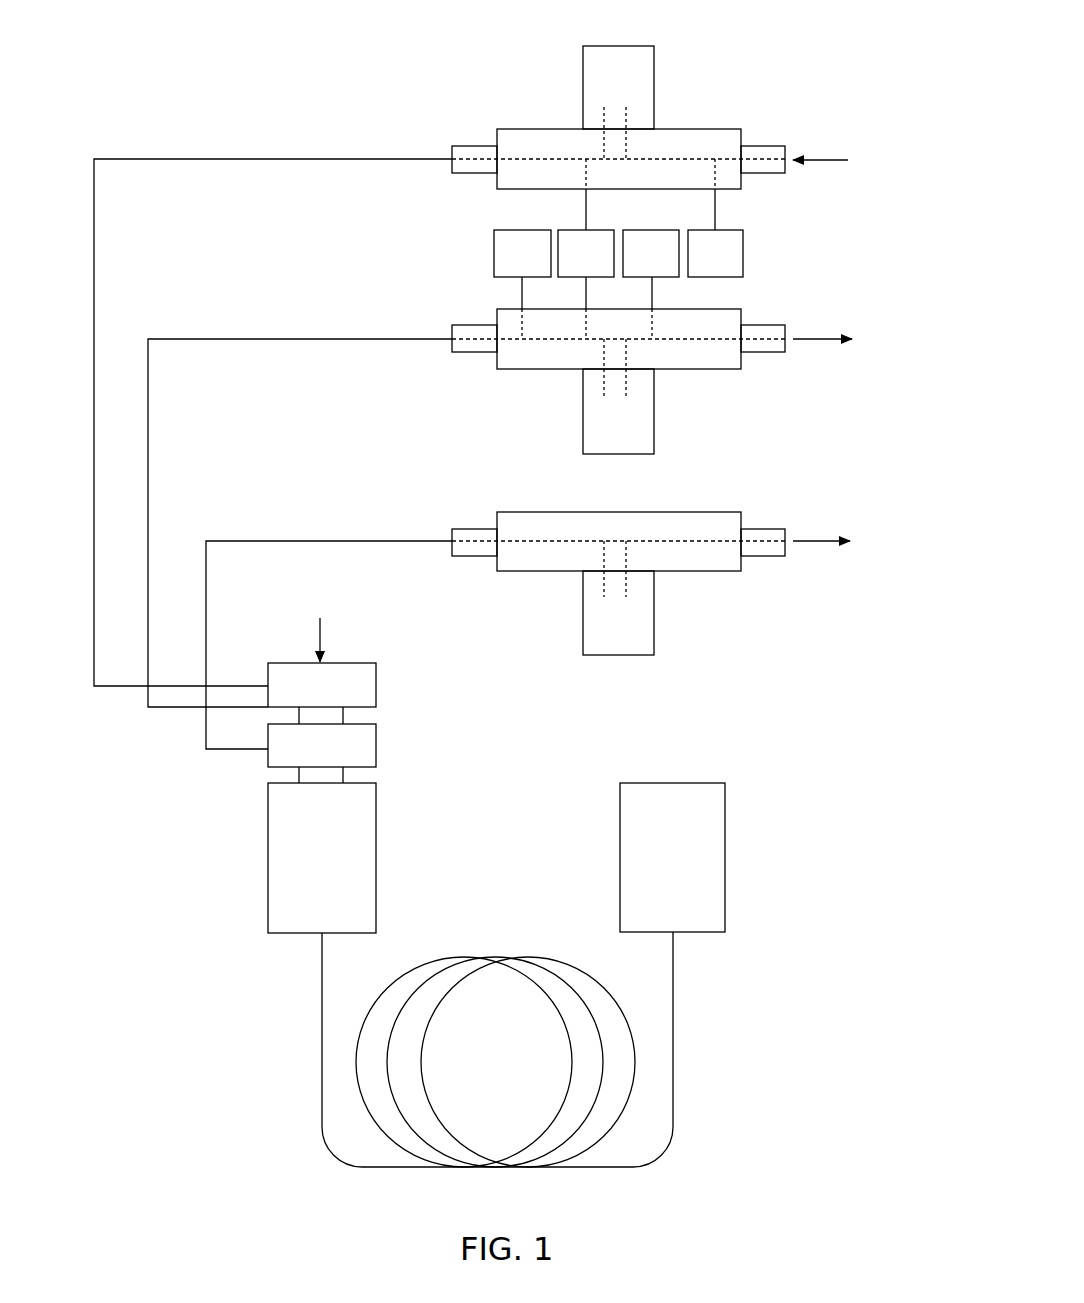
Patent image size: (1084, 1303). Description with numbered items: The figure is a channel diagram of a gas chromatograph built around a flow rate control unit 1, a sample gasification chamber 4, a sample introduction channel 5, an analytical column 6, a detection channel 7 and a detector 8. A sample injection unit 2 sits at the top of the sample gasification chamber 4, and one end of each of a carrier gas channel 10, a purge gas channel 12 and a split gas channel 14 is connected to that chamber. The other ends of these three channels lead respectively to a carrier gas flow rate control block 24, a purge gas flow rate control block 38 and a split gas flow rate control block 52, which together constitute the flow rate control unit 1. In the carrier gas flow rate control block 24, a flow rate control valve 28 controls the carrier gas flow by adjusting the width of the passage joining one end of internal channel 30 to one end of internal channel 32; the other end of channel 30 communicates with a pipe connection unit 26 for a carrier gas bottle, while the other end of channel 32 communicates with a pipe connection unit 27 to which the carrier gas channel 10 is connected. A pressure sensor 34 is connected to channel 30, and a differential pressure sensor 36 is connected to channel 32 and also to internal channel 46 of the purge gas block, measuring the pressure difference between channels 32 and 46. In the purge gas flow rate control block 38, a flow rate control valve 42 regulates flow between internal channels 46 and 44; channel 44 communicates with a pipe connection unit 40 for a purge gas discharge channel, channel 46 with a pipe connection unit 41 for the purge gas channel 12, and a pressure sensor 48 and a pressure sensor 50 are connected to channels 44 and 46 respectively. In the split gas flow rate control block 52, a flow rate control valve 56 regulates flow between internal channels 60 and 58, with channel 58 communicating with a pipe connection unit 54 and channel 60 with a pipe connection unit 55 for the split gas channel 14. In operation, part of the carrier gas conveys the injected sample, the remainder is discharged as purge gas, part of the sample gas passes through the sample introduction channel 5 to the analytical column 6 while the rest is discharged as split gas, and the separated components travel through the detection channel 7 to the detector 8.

The flow rate control unit 1 is at (817, 92).
The sample injection unit 2 is at (376, 663).
The sample gasification chamber 4 is at (376, 801).
The sample introduction channel 5 is at (323, 977).
The analytical column 6 is at (497, 958).
The detection channel 7 is at (673, 977).
The detector 8 is at (725, 801).
The carrier gas channel 10 is at (243, 159).
The purge gas channel 12 is at (270, 339).
The split gas channel 14 is at (283, 541).
The carrier gas flow rate control block 24 is at (741, 129).
The pipe connection unit 26 is at (762, 146).
The pipe connection unit 27 is at (477, 146).
The flow rate control valve 28 is at (629, 53).
The internal channel 30 is at (676, 159).
The internal channel 32 is at (551, 159).
The pressure sensor 34 is at (743, 230).
The differential pressure sensor 36 is at (558, 231).
The purge gas flow rate control block 38 is at (741, 369).
The pipe connection unit 40 is at (765, 325).
The pipe connection unit 41 is at (477, 325).
The flow rate control valve 42 is at (654, 440).
The internal channel 44 is at (698, 339).
The internal channel 46 is at (552, 339).
The pressure sensor 48 is at (679, 277).
The pressure sensor 50 is at (494, 241).
The split gas flow rate control block 52 is at (741, 571).
The pipe connection unit 54 is at (765, 529).
The pipe connection unit 55 is at (477, 529).
The flow rate control valve 56 is at (654, 620).
The internal channel 58 is at (688, 541).
The internal channel 60 is at (558, 541).